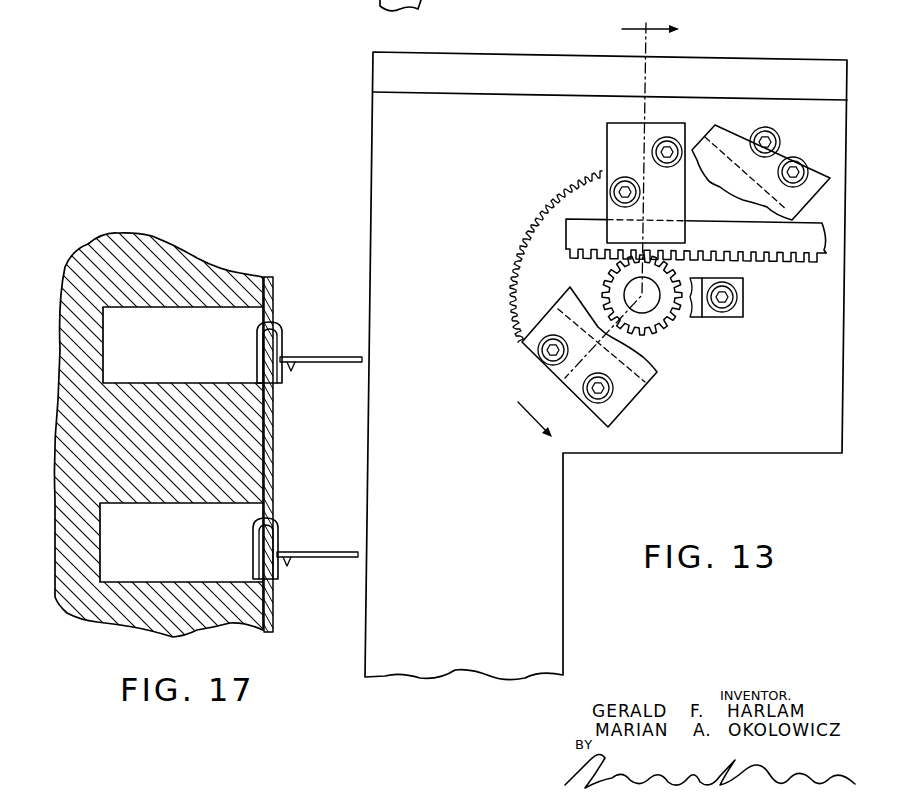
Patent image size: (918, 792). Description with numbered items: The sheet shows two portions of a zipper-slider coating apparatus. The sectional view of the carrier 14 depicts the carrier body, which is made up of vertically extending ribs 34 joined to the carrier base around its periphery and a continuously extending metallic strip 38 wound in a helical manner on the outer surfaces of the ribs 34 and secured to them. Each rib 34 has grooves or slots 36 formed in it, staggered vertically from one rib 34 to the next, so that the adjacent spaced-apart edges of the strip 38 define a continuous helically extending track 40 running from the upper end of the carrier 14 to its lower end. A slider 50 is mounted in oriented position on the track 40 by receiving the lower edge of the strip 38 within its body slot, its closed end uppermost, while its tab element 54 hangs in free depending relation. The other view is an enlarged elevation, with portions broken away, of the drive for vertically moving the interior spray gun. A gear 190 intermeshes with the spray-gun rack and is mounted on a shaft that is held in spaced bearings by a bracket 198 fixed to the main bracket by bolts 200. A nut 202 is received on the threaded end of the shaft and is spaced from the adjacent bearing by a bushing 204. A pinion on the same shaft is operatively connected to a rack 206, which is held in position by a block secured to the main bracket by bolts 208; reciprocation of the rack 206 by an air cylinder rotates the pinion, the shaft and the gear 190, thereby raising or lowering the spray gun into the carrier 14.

In FIG. 17, the carrier 14 is at (200, 252).
In FIG. 13, the carrier 14 is at (586, 228).
In FIG. 17, the ribs 34 is at (143, 250).
In FIG. 17, the slots 36 is at (222, 307).
In FIG. 17, the metallic strip 38 is at (273, 292).
In FIG. 17, the track 40 is at (263, 440).
In FIG. 17, the slider 50 is at (248, 340).
In FIG. 17, the tab element 54 is at (342, 357).
In FIG. 13, the gear 190 is at (543, 252).
In FIG. 13, the bracket 198 is at (646, 368).
In FIG. 13, the bolts 200 is at (546, 355).
In FIG. 13, the nut 202 is at (673, 318).
In FIG. 13, the bushing 204 is at (795, 237).
In FIG. 13, the rack 206 is at (615, 148).
In FIG. 13, the bolts 208 is at (672, 140).